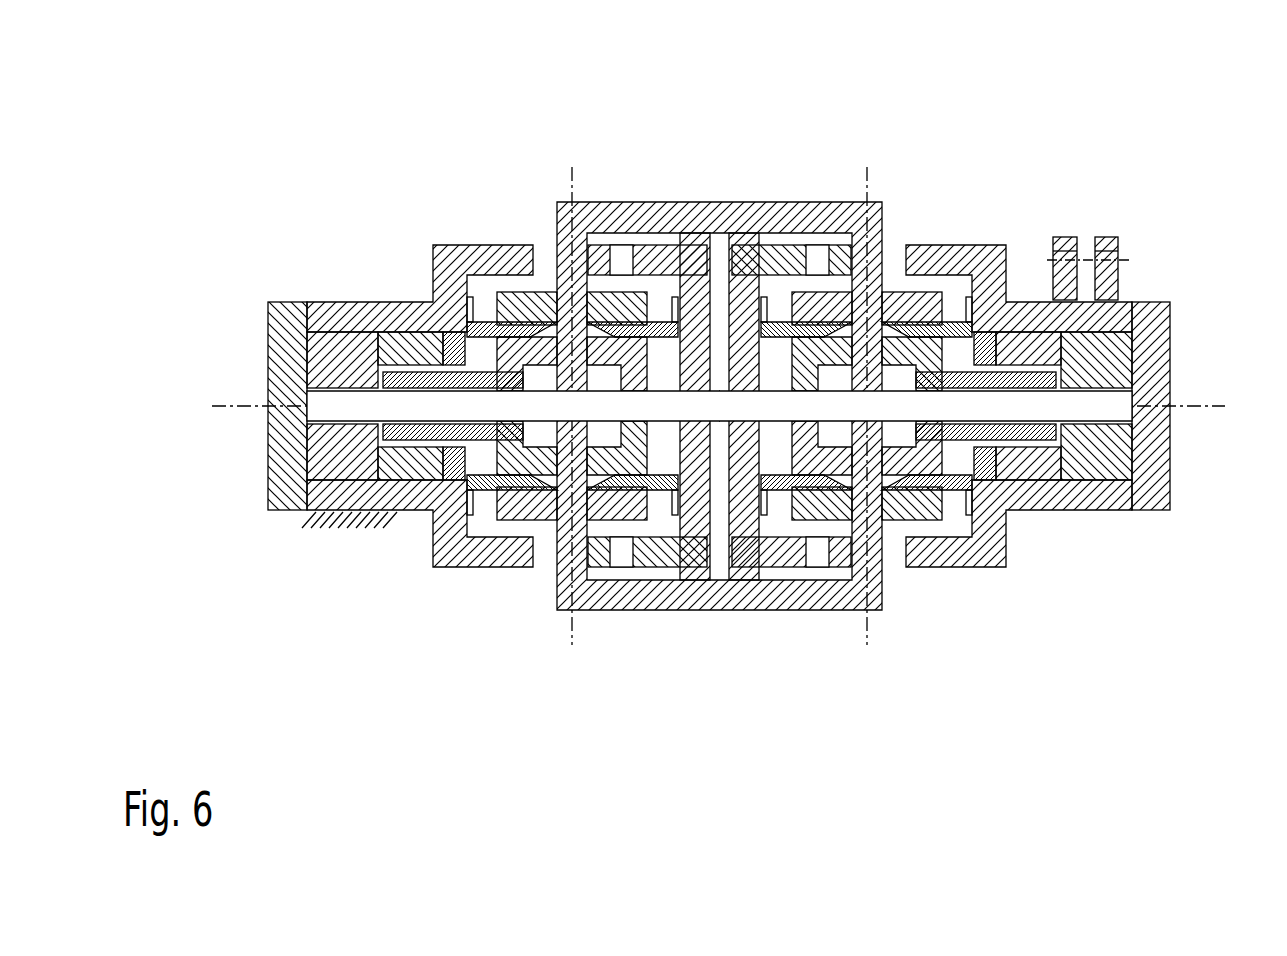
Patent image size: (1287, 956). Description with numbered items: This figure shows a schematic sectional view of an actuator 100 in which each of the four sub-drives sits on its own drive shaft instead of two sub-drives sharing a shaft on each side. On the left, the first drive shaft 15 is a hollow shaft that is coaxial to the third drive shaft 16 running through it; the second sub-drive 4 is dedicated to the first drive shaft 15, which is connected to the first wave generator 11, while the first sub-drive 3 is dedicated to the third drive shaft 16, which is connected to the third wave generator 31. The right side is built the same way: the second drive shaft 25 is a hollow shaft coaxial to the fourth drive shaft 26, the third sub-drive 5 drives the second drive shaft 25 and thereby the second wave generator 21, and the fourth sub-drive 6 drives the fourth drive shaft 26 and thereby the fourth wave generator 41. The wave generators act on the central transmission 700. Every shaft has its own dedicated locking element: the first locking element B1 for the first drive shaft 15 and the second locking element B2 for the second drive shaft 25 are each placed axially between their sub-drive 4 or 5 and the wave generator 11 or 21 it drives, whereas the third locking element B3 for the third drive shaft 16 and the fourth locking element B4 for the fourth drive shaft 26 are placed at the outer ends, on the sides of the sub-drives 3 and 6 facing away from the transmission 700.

The actuator 100 is at (250, 122).
The transmission 700 is at (713, 676).
The first sub-drive 3 is at (338, 345).
The second sub-drive 4 is at (410, 345).
The third sub-drive 5 is at (1020, 345).
The fourth sub-drive 6 is at (1085, 340).
The first wave generator 11 is at (510, 345).
The second wave generator 21 is at (920, 350).
The third wave generator 31 is at (633, 345).
The fourth wave generator 41 is at (807, 350).
The first drive shaft 15 is at (418, 432).
The second drive shaft 25 is at (1023, 437).
The third drive shaft 16 is at (340, 398).
The fourth drive shaft 26 is at (1108, 398).
The first locking element B1 is at (455, 480).
The second locking element B2 is at (983, 457).
The third locking element B3 is at (285, 453).
The fourth locking element B4 is at (1170, 440).